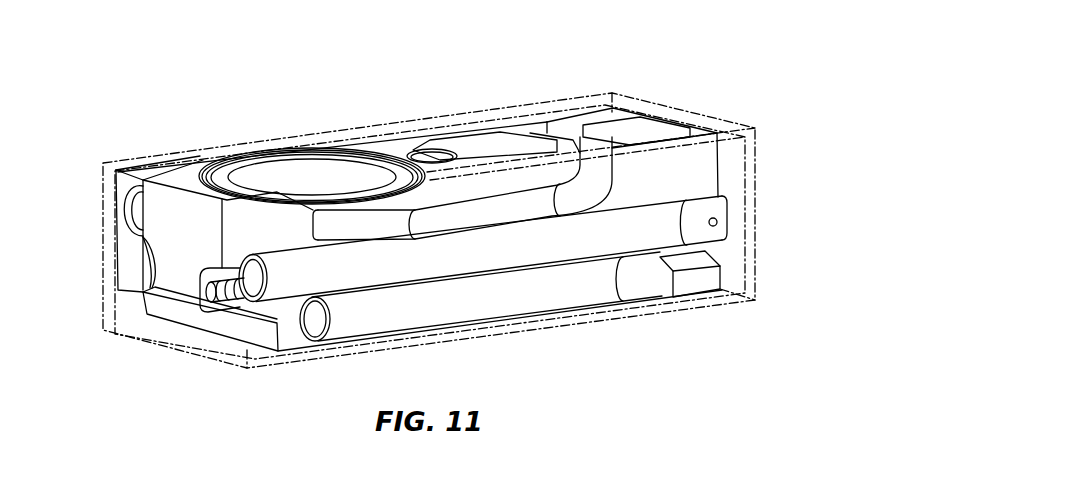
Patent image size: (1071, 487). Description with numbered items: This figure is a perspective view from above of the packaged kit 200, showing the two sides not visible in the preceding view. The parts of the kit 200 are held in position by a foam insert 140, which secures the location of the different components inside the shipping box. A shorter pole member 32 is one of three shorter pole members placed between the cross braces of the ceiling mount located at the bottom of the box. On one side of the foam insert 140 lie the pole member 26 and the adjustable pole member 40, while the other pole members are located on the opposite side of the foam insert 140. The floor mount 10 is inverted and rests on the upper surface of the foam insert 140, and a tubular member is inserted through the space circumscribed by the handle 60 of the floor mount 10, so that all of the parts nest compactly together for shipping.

The kit 200 is at (165, 100).
The floor mount 10 is at (230, 170).
The handle 60 is at (598, 188).
The pole member 26 is at (657, 217).
The shorter pole member 32 is at (550, 293).
The foam insert 140 is at (180, 253).
The adjustable pole member 40 is at (240, 305).